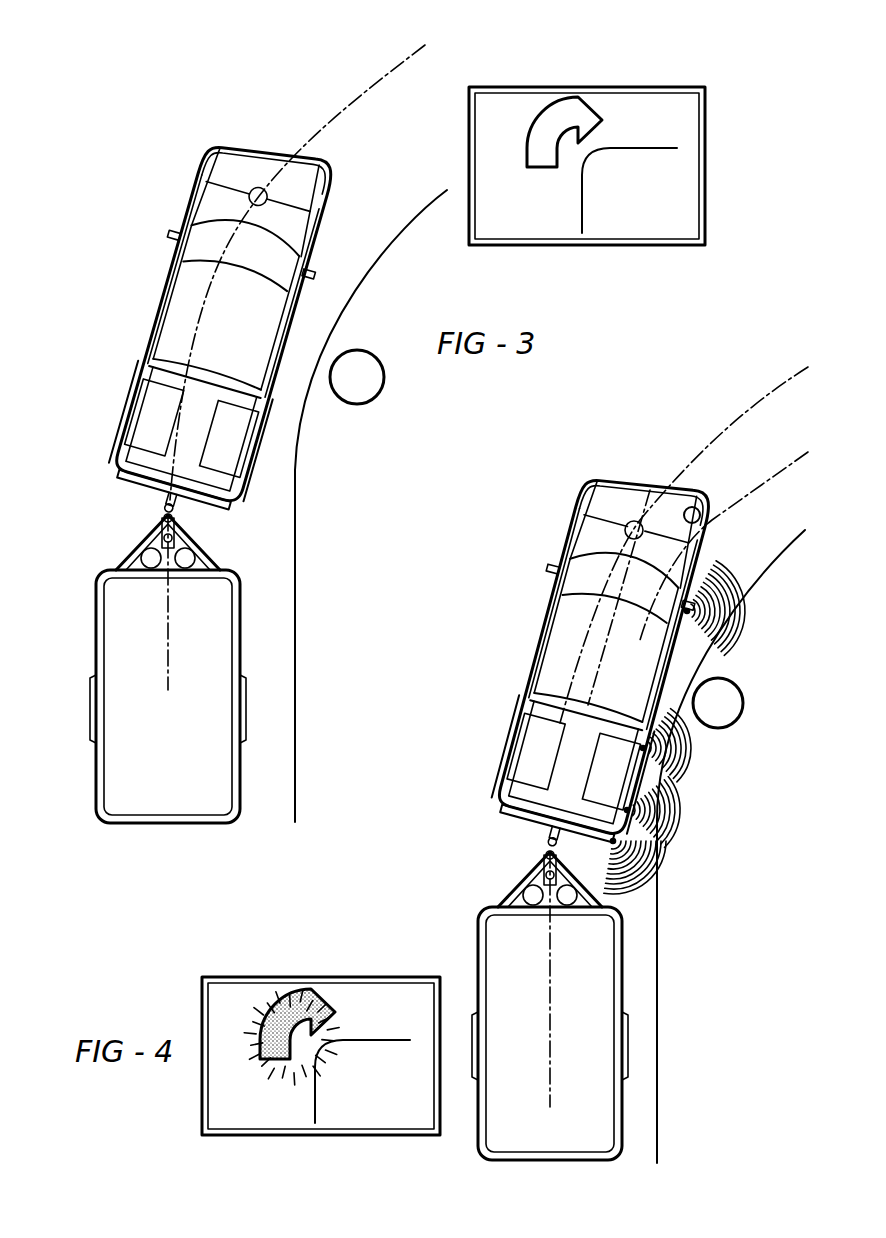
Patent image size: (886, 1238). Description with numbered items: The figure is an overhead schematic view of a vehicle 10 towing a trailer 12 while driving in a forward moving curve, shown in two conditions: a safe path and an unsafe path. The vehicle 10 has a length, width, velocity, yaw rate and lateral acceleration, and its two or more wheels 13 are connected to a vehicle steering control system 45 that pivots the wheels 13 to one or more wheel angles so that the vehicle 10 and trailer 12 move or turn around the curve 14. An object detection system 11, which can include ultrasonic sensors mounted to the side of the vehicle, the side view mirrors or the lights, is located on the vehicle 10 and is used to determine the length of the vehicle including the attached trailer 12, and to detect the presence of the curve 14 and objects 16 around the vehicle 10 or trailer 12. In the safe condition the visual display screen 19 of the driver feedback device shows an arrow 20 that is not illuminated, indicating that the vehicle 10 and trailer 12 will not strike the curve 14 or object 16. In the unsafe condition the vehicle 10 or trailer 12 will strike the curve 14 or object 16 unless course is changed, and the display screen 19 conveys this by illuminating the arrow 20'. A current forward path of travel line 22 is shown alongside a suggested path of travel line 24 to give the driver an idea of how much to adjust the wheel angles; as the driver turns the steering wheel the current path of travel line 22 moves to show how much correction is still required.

In FIG. 3, the vehicle 10 is at (192, 292).
In FIG. 4, the object detection system 11 is at (686, 612).
In FIG. 3, the trailer 12 is at (122, 628).
In FIG. 4, the trailer 12 is at (550, 1005).
In FIG. 4, the wheels 13 is at (700, 503).
In FIG. 3, the curve 14 is at (300, 540).
In FIG. 4, the curve 14 is at (748, 592).
In FIG. 3, the object 16 is at (363, 392).
In FIG. 4, the object 16 is at (735, 680).
In FIG. 3, the visual display screen 19 is at (672, 200).
In FIG. 4, the visual display screen 19 is at (375, 1105).
In FIG. 3, the arrow 20 is at (571, 106).
In FIG. 4, the illuminated arrow 20' is at (291, 999).
In FIG. 3, the current forward path of travel line 22 is at (345, 102).
In FIG. 4, the current forward path of travel line 22 is at (737, 500).
In FIG. 4, the suggested path of travel line 24 is at (782, 384).
In FIG. 4, the vehicle steering control system 45 is at (632, 522).